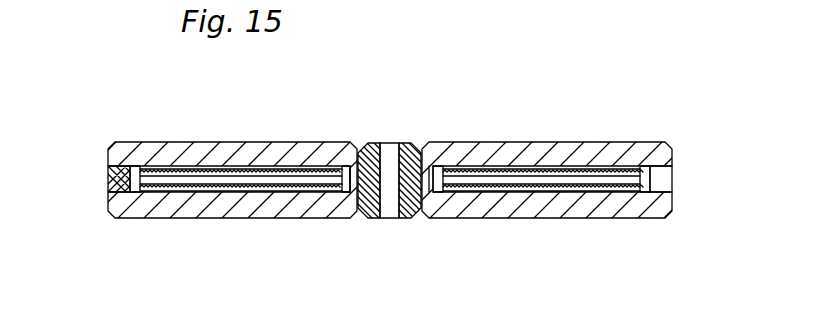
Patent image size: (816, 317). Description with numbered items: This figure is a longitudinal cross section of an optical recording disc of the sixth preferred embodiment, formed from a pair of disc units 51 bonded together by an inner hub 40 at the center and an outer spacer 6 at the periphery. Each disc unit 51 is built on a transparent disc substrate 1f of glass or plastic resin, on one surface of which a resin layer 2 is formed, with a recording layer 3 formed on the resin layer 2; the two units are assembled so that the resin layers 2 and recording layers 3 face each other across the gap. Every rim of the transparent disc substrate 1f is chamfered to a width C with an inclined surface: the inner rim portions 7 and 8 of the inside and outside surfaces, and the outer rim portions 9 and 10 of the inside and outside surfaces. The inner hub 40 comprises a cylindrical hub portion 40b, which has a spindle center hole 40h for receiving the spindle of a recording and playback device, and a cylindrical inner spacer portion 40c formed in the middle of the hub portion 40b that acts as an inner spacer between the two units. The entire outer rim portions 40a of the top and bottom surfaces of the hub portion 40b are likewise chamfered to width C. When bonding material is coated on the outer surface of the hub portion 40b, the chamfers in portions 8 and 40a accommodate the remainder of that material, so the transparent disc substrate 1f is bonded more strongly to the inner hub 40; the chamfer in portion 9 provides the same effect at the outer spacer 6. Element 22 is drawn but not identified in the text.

The transparent disc substrate 1f is at (188, 207).
The resin layer 2 is at (230, 212).
The recording layer 3 is at (165, 186).
The outer spacer 6 is at (108, 182).
The inner rim portion of inside surface 7 is at (385, 150).
The inner rim portion of outside surface 8 is at (352, 150).
The outer rim portion of inside surface 9 is at (108, 164).
The outer rim portion of outside surface 10 is at (110, 144).
The corrugated strip 22 is at (297, 194).
The inner hub 40 is at (407, 219).
The outer rim portion of cylindrical hub portion 40a is at (365, 145).
The cylindrical hub portion 40b is at (412, 145).
The cylindrical inner spacer portion 40c is at (337, 143).
The spindle center hole 40h is at (392, 155).
The disc unit 51 is at (213, 141).